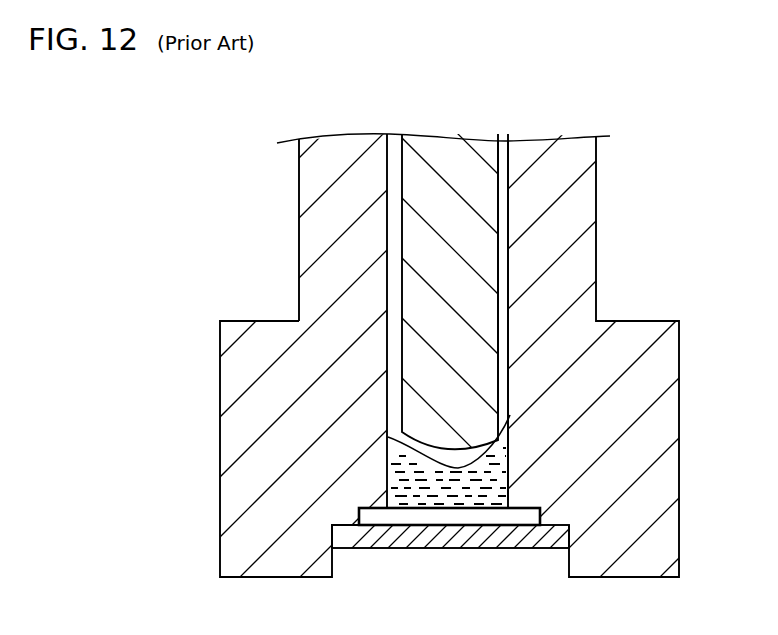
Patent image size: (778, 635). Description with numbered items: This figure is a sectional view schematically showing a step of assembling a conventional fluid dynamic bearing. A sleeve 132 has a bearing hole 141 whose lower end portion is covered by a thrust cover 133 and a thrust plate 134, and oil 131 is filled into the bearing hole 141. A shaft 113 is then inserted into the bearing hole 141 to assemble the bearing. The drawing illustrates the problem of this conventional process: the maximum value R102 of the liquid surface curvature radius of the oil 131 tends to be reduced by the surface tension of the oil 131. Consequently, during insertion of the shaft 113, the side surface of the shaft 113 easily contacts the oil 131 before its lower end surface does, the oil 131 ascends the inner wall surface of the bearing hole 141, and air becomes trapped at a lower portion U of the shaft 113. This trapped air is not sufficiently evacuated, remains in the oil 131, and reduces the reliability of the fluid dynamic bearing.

The shaft 113 is at (477, 210).
The bearing hole 141 is at (508, 278).
The maximum value of the liquid surface curvature radius R102 is at (450, 426).
The oil 131 is at (495, 487).
The sleeve 132 is at (646, 565).
The thrust cover 133 is at (465, 540).
The thrust plate 134 is at (405, 525).
The lower portion of the shaft U is at (467, 452).